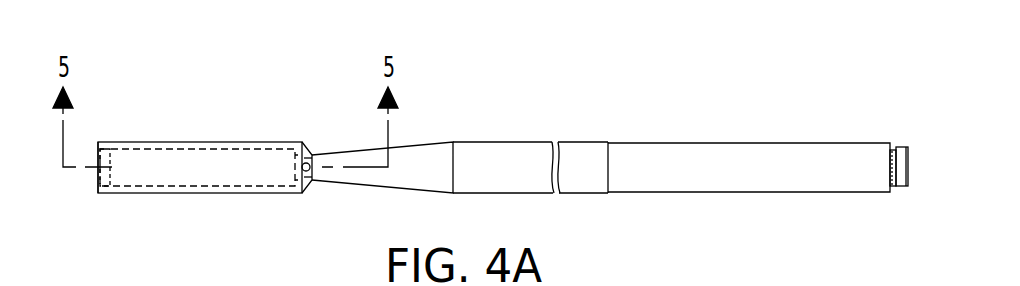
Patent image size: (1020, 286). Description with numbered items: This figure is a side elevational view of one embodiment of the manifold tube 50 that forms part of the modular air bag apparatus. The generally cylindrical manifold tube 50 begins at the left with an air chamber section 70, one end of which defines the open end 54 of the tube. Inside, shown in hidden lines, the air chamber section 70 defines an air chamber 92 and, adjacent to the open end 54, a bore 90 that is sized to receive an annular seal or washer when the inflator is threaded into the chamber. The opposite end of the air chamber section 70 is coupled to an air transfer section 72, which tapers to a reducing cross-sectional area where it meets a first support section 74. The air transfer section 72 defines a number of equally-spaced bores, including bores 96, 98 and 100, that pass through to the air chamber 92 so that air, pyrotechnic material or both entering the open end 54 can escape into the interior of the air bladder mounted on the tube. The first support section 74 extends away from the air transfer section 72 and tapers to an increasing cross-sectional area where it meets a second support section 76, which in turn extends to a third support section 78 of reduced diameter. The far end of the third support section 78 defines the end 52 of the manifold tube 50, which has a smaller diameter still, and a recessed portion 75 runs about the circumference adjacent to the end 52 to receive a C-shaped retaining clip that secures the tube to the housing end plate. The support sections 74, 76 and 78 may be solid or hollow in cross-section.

The manifold tube 50 is at (622, 68).
The end 52 is at (910, 162).
The open end 54 is at (98, 158).
The air chamber section 70 is at (173, 143).
The air transfer section 72 is at (308, 148).
The first support section 74 is at (424, 145).
The recessed portion 75 is at (893, 188).
The second support section 76 is at (528, 142).
The third support section 78 is at (768, 143).
The bore 90 is at (103, 178).
The air chamber 92 is at (183, 193).
The bore 96 is at (313, 158).
The bore 98 is at (311, 180).
The bore 100 is at (313, 170).